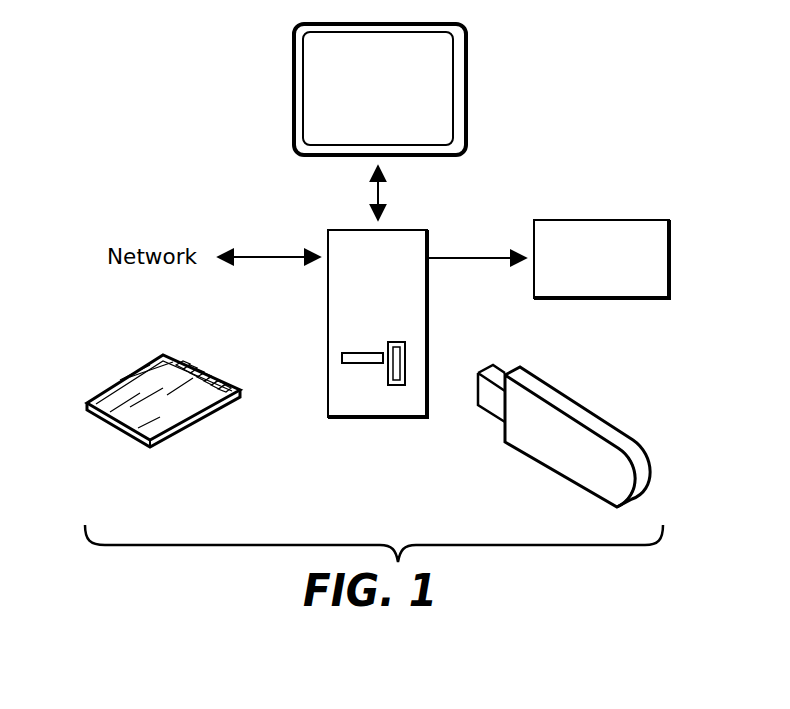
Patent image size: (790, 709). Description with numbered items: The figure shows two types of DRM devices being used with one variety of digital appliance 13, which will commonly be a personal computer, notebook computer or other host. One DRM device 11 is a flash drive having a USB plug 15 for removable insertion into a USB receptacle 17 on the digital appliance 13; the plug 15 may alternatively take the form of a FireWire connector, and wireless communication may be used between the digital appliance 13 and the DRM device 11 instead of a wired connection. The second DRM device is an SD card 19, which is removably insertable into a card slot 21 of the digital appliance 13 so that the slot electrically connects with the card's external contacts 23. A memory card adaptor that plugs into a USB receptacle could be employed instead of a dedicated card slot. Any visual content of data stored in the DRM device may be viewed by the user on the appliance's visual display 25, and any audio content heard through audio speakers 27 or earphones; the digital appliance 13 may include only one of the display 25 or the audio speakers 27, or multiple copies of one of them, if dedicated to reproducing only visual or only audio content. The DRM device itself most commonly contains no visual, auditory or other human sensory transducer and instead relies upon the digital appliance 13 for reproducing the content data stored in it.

The DRM device 11 is at (551, 432).
The digital appliance 13 is at (372, 418).
The USB plug 15 is at (490, 420).
The USB receptacle 17 is at (405, 360).
The SD card 19 is at (138, 383).
The card slot 21 is at (342, 358).
The external contacts 23 is at (182, 360).
The visual display 25 is at (466, 108).
The audio speakers 27 is at (609, 220).